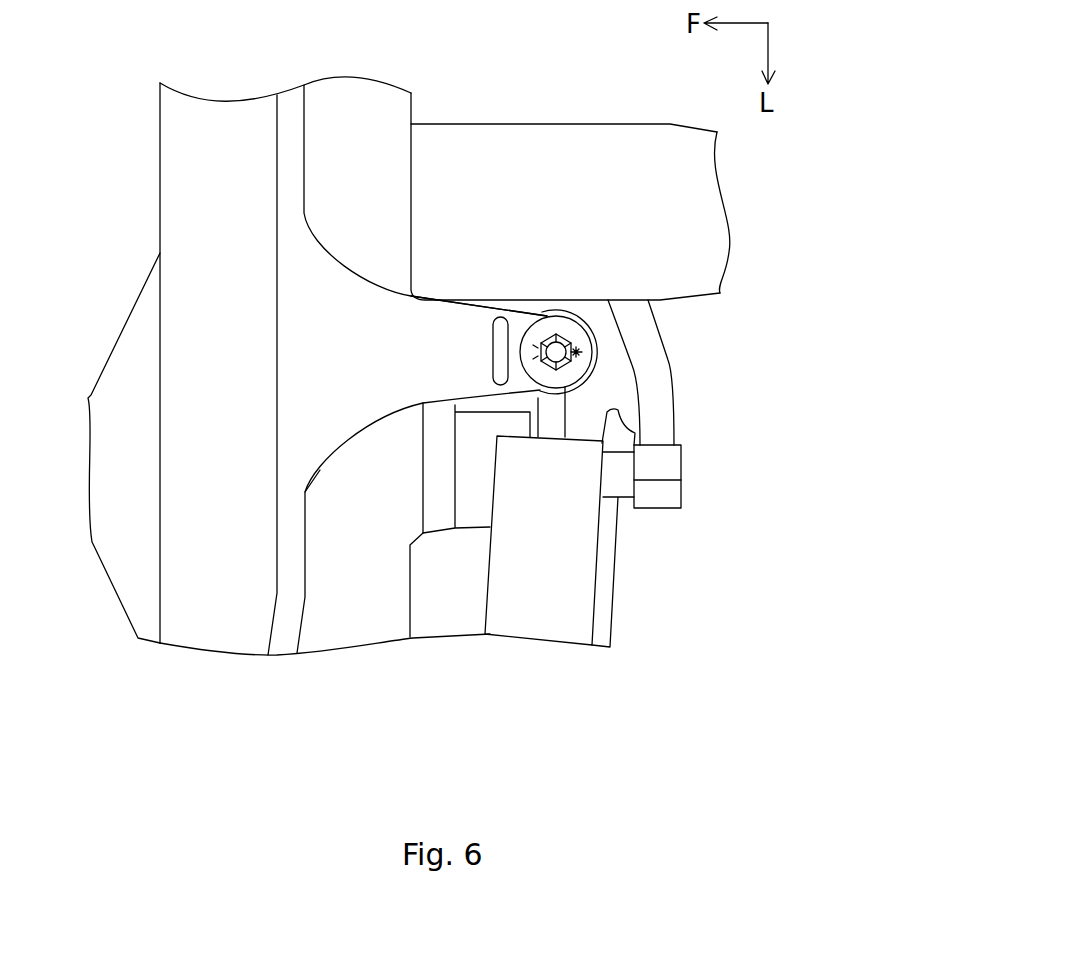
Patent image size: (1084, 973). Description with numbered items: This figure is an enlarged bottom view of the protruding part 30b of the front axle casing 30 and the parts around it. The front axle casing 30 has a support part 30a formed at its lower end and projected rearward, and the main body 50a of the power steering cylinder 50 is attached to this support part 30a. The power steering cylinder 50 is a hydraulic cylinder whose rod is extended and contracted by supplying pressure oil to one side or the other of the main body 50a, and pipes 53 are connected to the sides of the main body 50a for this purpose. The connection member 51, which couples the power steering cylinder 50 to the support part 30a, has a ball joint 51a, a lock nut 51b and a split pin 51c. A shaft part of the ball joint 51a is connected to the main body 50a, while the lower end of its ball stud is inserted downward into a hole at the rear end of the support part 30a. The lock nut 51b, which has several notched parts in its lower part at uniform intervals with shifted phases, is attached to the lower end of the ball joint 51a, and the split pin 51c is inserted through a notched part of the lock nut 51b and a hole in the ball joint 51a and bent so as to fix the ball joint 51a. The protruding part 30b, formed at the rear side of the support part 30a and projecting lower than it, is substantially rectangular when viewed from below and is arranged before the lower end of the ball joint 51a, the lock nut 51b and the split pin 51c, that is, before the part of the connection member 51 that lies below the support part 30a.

The front axle casing 30 is at (116, 619).
The support part 30a is at (463, 313).
The protruding part 30b is at (502, 313).
The power steering cylinder 50 is at (480, 555).
The main body 50a is at (513, 592).
The connection member 51 is at (659, 354).
The ball joint 51a is at (556, 356).
The lock nut 51b is at (565, 345).
The split pin 51c is at (582, 352).
The pipe 53 is at (660, 423).